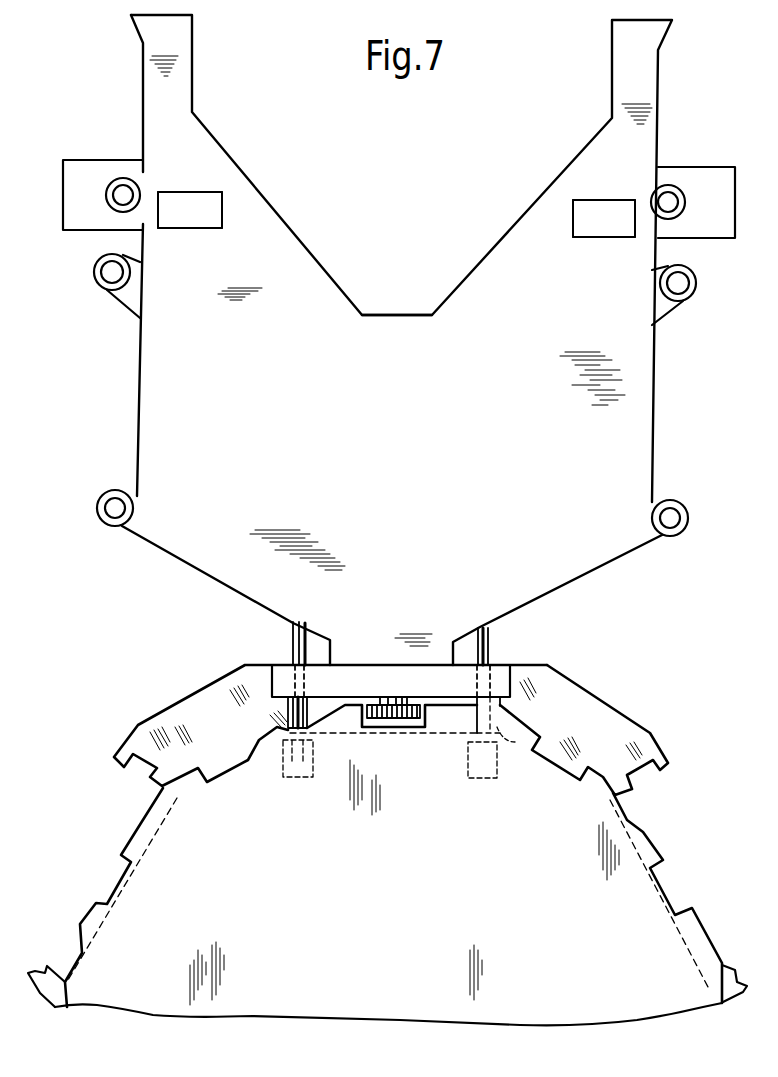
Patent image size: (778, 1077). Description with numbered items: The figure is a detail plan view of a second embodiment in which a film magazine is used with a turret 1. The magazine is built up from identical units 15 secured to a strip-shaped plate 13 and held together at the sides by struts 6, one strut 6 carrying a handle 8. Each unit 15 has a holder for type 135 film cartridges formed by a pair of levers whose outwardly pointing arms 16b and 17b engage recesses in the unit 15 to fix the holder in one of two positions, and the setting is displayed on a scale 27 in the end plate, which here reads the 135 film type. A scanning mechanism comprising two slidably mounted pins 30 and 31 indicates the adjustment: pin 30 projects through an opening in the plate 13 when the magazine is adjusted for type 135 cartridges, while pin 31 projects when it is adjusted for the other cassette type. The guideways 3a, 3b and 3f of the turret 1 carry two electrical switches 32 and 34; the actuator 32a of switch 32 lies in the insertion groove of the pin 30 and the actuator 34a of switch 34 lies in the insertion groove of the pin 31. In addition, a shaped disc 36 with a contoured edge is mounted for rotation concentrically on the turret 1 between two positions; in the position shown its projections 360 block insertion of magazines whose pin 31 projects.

The turret 1 is at (618, 732).
The guideway 3a is at (438, 722).
The guideway 3b is at (100, 916).
The guideway 3f is at (683, 928).
The strut 6 is at (112, 200).
The handle 8 is at (101, 172).
The strip-shaped plate 13 is at (358, 678).
The unit 15 is at (333, 302).
The outwardly pointing lever arm 16b is at (128, 302).
The outwardly pointing lever arm 17b is at (665, 308).
The scale 27 is at (224, 203).
The pin 30 is at (293, 641).
The pin 31 is at (492, 645).
The electrical switch 32 is at (300, 773).
The switch actuator 32a is at (292, 757).
The electrical switch 34 is at (482, 775).
The switch actuator 34a is at (500, 736).
The shaped disc 36 is at (315, 1026).
The type 135 film cartridge 135 is at (396, 214).
The projection 360 is at (510, 707).